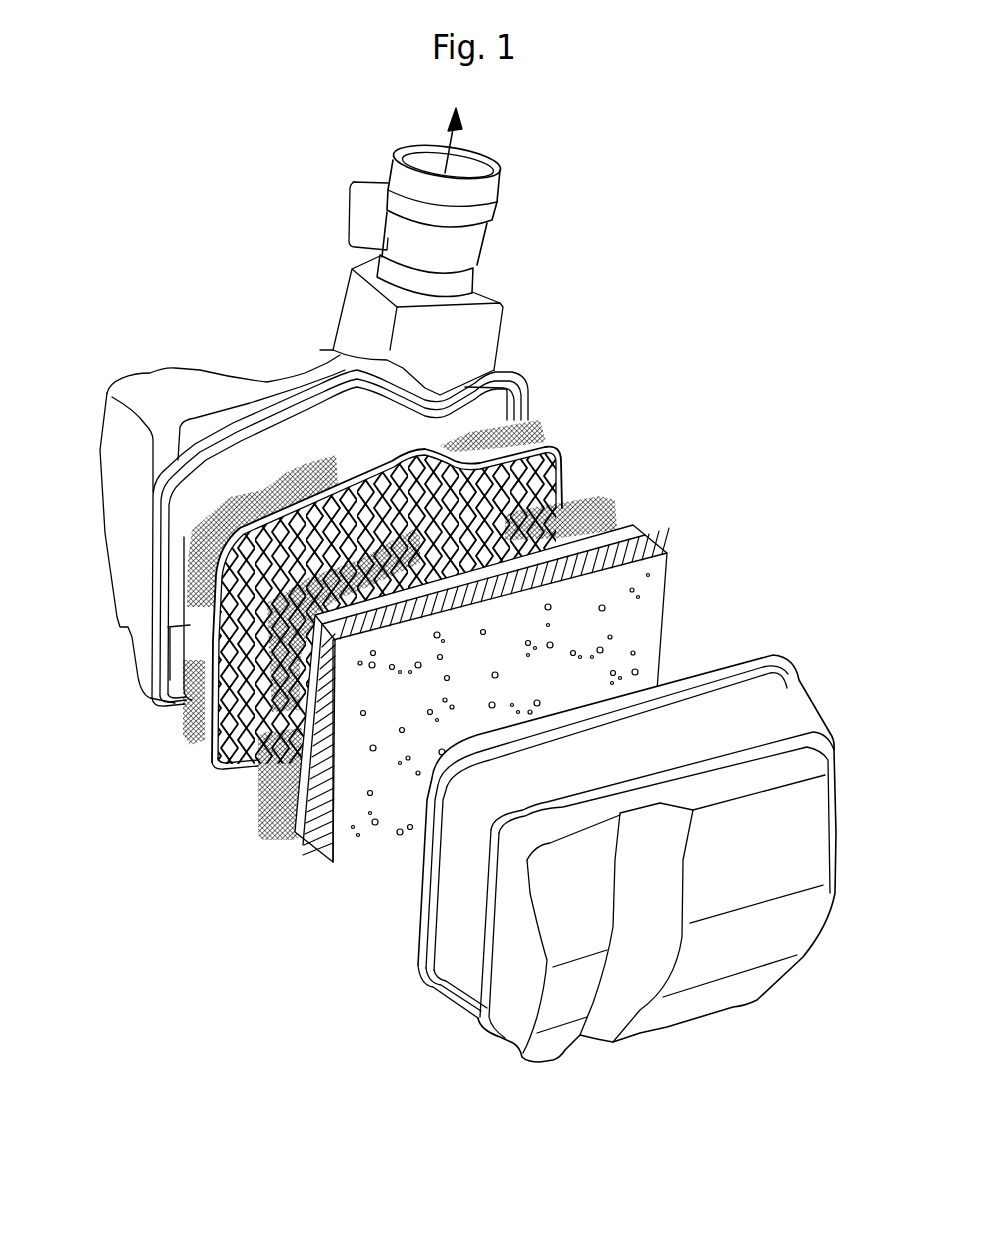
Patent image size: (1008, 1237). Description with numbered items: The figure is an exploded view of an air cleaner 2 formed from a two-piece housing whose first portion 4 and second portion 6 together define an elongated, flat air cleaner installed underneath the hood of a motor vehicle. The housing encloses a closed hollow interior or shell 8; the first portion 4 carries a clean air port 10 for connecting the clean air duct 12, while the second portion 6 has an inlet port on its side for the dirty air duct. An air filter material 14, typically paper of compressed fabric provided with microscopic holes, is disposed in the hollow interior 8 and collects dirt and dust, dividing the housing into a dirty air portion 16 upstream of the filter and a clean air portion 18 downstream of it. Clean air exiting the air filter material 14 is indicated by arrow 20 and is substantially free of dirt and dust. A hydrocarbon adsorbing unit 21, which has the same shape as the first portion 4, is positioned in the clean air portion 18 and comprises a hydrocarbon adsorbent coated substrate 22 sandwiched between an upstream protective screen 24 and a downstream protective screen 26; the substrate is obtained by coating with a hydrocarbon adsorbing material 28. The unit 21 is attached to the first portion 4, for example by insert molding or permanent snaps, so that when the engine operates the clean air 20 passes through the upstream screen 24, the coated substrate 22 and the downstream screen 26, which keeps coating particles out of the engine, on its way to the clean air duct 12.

The air cleaner 2 is at (97, 350).
The first portion of housing 4 is at (107, 466).
The second portion of housing 6 is at (619, 858).
The hollow interior 8 is at (237, 483).
The clean air port 10 is at (473, 283).
The clean air duct 12 is at (502, 192).
The air filter material 14 is at (651, 629).
The dirty air portion 16 is at (421, 933).
The clean air portion 18 is at (253, 794).
The clean air 20 is at (463, 134).
The hydrocarbon adsorbing unit 21 is at (165, 760).
The hydrocarbon adsorbent coated substrate 22 is at (415, 597).
The upstream protective screen 24 is at (429, 660).
The downstream protective screen 26 is at (543, 428).
The hydrocarbon adsorbing material 28 is at (547, 477).